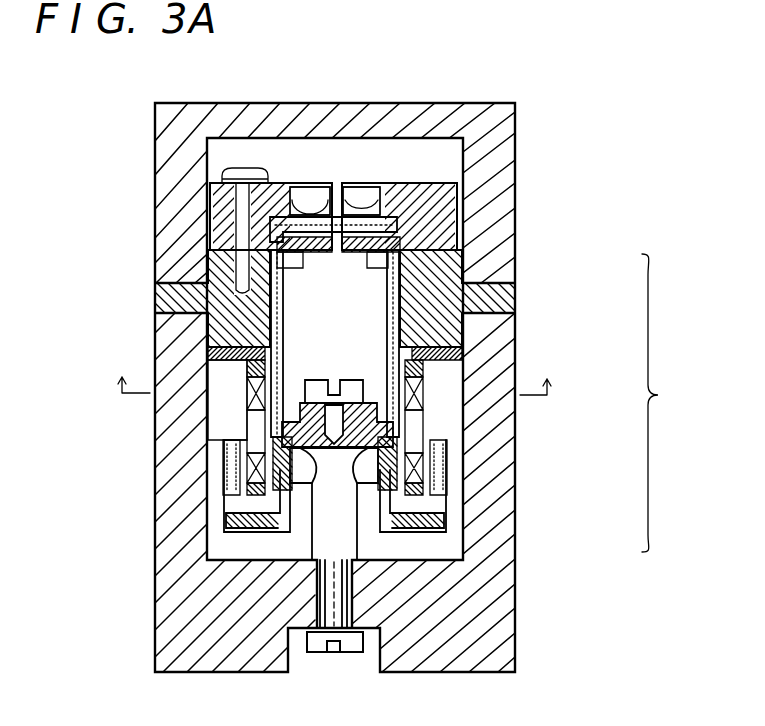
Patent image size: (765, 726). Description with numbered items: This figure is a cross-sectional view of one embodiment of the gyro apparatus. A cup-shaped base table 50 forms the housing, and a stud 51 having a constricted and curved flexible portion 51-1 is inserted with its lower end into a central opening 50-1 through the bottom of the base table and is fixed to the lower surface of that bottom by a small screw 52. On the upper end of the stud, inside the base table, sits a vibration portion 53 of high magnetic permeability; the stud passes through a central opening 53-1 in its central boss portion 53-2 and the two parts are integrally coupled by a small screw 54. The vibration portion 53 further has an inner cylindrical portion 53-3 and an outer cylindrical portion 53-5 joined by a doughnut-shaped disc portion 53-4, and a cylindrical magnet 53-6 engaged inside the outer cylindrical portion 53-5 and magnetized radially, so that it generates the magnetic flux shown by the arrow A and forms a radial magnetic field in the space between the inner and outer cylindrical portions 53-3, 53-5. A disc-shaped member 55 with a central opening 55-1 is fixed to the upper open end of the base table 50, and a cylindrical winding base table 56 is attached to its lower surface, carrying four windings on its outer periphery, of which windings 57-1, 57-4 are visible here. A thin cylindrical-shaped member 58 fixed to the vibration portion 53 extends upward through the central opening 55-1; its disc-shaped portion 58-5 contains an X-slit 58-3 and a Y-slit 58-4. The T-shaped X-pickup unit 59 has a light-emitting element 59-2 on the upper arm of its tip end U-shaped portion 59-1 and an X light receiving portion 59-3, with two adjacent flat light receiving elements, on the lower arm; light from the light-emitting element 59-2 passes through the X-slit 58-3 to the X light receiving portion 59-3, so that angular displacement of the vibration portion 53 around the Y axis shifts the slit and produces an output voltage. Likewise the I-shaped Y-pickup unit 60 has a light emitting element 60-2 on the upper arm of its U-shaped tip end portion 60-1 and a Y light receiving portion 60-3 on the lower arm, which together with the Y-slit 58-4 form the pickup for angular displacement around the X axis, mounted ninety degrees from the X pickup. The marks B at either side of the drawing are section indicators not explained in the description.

The cup-shaped base table 50 is at (500, 604).
The central opening 50-1 is at (353, 598).
The stud 51 is at (320, 533).
The constricted and curved flexible portion 51-1 is at (325, 492).
The small screw 52 is at (290, 637).
The vibration portion 53 is at (700, 399).
The central opening 53-1 is at (440, 355).
The central boss portion 53-2 is at (405, 385).
The inner cylindrical portion 53-3 is at (398, 440).
The doughnut-shaped disc portion 53-4 is at (440, 528).
The outer cylindrical portion 53-5 is at (424, 492).
The cylindrical magnet 53-6 is at (448, 470).
The small screw 54 is at (352, 376).
The disc-shaped member 55 is at (210, 292).
The central opening 55-1 is at (215, 330).
The cylindrical winding base table 56 is at (232, 400).
The winding 57-1 is at (245, 436).
The winding 57-4 is at (164, 466).
The thin cylindrical-shaped member 58 is at (372, 290).
The X-slit 58-3 is at (402, 215).
The Y-slit 58-4 is at (310, 200).
The disc-shaped portion 58-5 is at (405, 252).
The T-shaped X-pickup unit 59 is at (430, 225).
The tip end U-shaped portion 59-1 is at (442, 240).
The light-emitting element 59-2 is at (362, 203).
The X light receiving portion 59-3 is at (465, 235).
The I-shaped Y-pickup unit 60 is at (265, 205).
The U-shaped tip end portion 60-1 is at (283, 232).
The light emitting element 60-2 is at (225, 178).
The Y light receiving portion 60-3 is at (277, 250).
The arrow showing magnetic flux A is at (358, 583).
The section line B is at (334, 372).